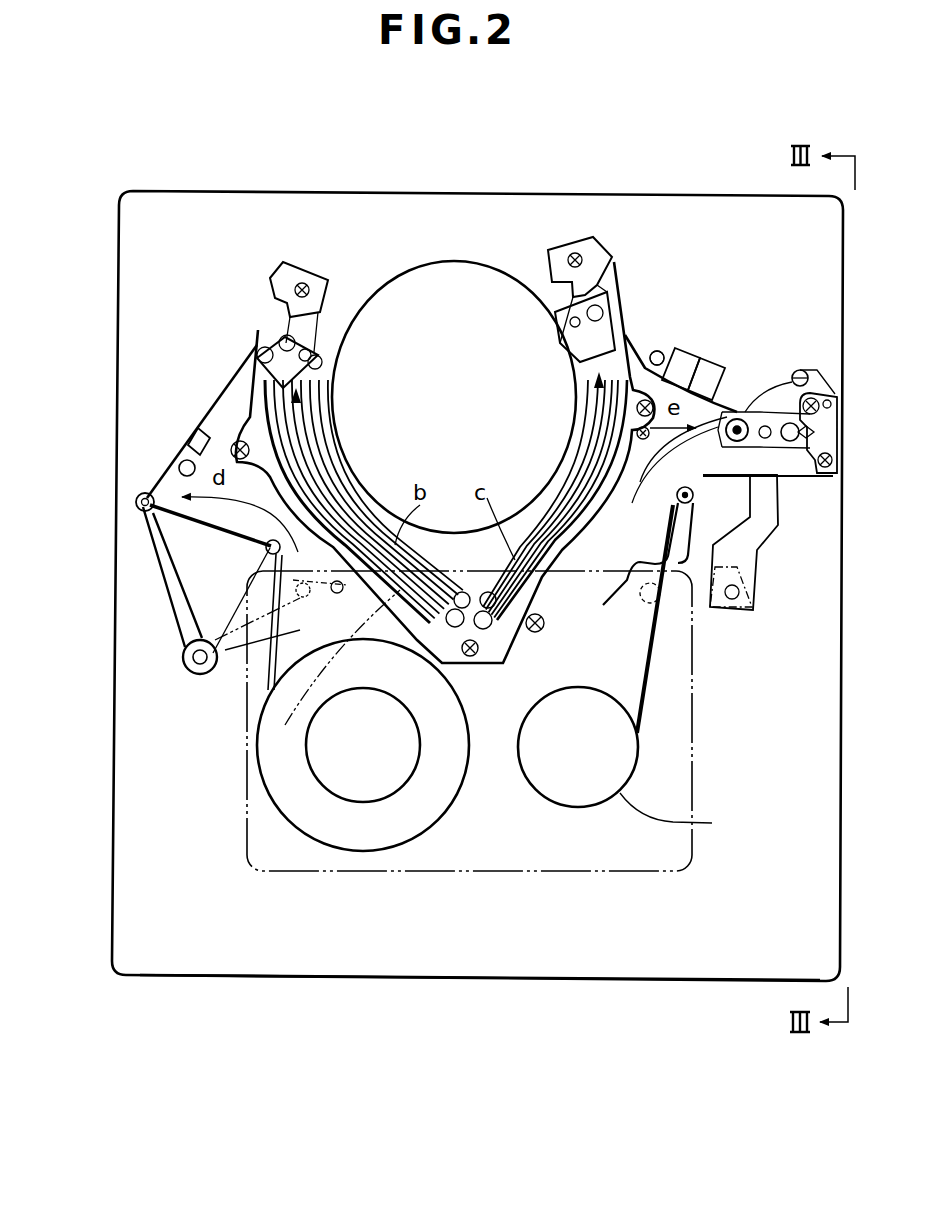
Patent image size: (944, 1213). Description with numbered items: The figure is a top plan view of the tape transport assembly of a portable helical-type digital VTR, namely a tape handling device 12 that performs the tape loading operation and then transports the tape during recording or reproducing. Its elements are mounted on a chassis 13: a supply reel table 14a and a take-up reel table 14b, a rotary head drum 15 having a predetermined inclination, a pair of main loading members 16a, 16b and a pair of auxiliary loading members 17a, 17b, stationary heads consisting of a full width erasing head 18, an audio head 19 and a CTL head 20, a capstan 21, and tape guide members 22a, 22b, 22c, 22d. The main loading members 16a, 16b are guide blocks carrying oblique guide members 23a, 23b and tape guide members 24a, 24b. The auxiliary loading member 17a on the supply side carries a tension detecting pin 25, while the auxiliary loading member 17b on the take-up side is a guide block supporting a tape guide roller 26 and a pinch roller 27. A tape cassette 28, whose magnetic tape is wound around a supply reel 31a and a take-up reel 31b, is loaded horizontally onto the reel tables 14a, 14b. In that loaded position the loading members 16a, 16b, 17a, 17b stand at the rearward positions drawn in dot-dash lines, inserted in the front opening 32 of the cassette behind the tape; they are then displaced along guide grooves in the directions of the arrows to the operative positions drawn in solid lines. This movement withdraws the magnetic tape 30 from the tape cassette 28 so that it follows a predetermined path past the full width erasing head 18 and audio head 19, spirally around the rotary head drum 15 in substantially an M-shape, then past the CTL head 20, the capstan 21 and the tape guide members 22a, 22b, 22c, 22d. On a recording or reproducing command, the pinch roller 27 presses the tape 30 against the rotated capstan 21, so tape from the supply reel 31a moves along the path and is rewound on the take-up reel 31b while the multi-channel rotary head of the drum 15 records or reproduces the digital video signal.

The tape handling device 12 is at (284, 188).
The chassis 13 is at (287, 962).
The supply reel table 14a is at (372, 787).
The take-up reel table 14b is at (586, 795).
The rotary head drum 15 is at (460, 298).
The main loading member 16a is at (240, 333).
The main loading member 16b is at (621, 262).
The auxiliary loading member 17a is at (133, 510).
The auxiliary loading member 17b is at (830, 375).
The full width erasing head 18 is at (196, 428).
The audio head 19 is at (686, 370).
The CTL head 20 is at (716, 378).
The capstan 21 is at (744, 412).
The tape guide member 22a is at (267, 550).
The tape guide member 22b is at (181, 463).
The tape guide member 22c is at (660, 350).
The tape guide member 22d is at (694, 501).
The oblique guide member 23a is at (326, 368).
The oblique guide member 23b is at (565, 327).
The tape guide member 24a is at (278, 318).
The tape guide member 24b is at (607, 300).
The tension detecting pin 25 is at (140, 516).
The tape guide roller 26 is at (814, 432).
The pinch roller 27 is at (812, 400).
The tape cassette 28 is at (478, 858).
The magnetic tape 30 is at (234, 390).
The supply reel 31a is at (290, 805).
The take-up reel 31b is at (616, 800).
The front opening 32 is at (300, 735).